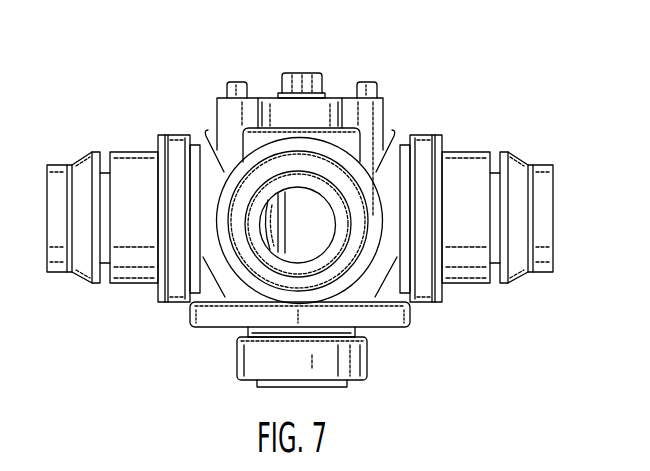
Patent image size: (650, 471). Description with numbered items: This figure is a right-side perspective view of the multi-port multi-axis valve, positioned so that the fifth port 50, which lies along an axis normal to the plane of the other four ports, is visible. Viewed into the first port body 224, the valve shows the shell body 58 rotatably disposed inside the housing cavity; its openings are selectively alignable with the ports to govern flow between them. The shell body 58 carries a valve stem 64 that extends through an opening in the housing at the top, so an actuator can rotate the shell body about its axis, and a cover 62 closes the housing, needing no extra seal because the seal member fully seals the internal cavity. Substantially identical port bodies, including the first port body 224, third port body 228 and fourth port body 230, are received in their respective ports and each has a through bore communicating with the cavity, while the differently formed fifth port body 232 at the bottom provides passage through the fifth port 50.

The fifth port 50 is at (377, 293).
The shell body 58 is at (300, 237).
The cover 62 is at (338, 96).
The valve stem 64 is at (302, 80).
The first port body 224 is at (265, 187).
The third port body 228 is at (73, 270).
The fourth port body 230 is at (542, 272).
The fifth port body 232 is at (348, 362).